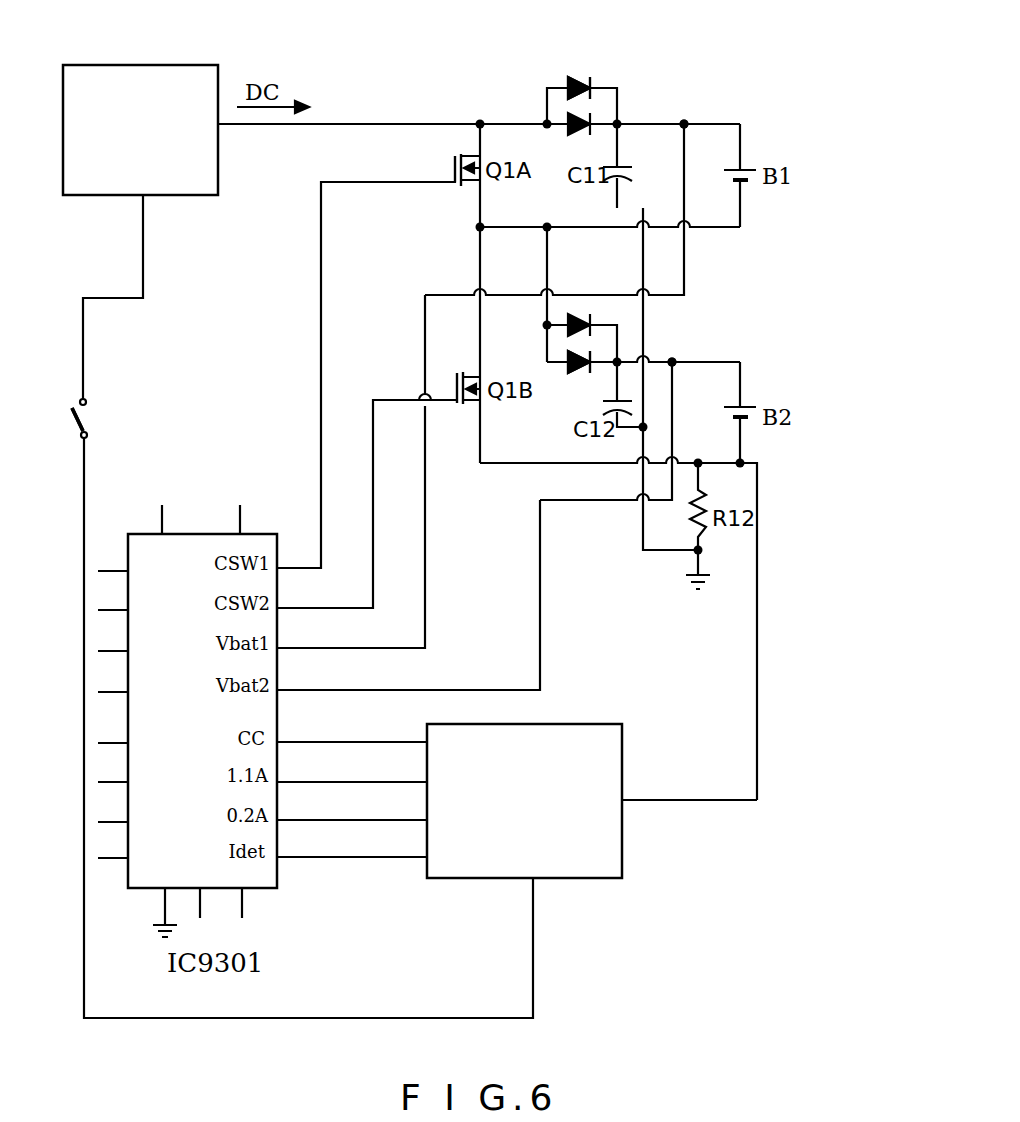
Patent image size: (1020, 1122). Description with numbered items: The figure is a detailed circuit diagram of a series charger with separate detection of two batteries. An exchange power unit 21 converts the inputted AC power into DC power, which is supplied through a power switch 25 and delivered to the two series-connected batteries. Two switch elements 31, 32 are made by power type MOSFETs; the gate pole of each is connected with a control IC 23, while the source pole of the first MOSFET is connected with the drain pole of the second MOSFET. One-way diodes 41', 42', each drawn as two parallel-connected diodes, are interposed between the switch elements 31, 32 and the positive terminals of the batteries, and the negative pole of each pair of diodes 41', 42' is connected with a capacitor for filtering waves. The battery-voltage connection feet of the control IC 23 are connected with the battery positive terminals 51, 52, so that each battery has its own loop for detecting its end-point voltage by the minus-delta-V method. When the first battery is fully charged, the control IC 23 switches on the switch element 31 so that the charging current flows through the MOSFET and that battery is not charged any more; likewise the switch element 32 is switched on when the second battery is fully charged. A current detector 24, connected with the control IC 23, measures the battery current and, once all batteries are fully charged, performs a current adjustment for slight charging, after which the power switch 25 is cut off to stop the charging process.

The exchange power unit 21 is at (162, 68).
The control IC 23 is at (182, 540).
The current detector 24 is at (617, 747).
The power switch 25 is at (90, 418).
The switch element 31 is at (450, 165).
The switch element 32 is at (452, 390).
The diodes 41' is at (617, 59).
The diodes 42' is at (554, 398).
The battery positive terminal 51 is at (692, 118).
The battery positive terminal 52 is at (682, 350).